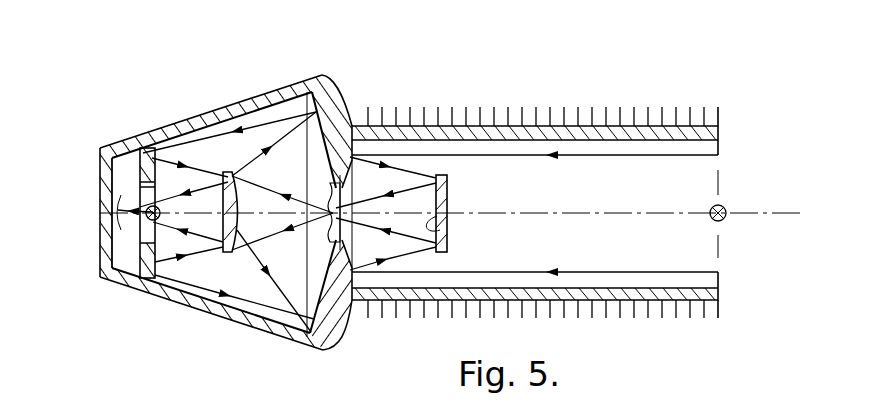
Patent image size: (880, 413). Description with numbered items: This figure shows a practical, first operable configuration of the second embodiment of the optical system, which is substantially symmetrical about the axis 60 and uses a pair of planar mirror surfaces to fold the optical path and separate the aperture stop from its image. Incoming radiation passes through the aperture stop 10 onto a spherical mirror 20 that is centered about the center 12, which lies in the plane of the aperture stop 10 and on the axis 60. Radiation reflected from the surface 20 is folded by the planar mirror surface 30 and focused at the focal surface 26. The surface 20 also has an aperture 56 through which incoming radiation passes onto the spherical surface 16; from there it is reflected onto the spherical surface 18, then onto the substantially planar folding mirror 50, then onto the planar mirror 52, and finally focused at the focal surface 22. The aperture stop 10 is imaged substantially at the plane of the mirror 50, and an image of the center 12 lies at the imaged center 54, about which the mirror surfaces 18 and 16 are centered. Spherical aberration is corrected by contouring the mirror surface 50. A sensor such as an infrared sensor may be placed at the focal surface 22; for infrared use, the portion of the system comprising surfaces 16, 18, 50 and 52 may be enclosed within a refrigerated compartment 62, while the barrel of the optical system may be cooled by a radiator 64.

The aperture stop 10 is at (720, 114).
The center 12 is at (723, 203).
The spherical surface 16 is at (237, 227).
The spherical surface 18 is at (293, 117).
The spherical mirror 20 is at (351, 134).
The focal surface 22 is at (128, 223).
The focal surface 26 is at (328, 211).
The planar mirror surface 30 is at (447, 234).
The planar folding mirror 50 is at (152, 180).
The planar mirror 52 is at (222, 197).
The imaged center 54 is at (148, 218).
The aperture 56 is at (342, 192).
The axis 60 is at (783, 213).
The refrigerated compartment 62 is at (208, 308).
The radiator 64 is at (594, 112).